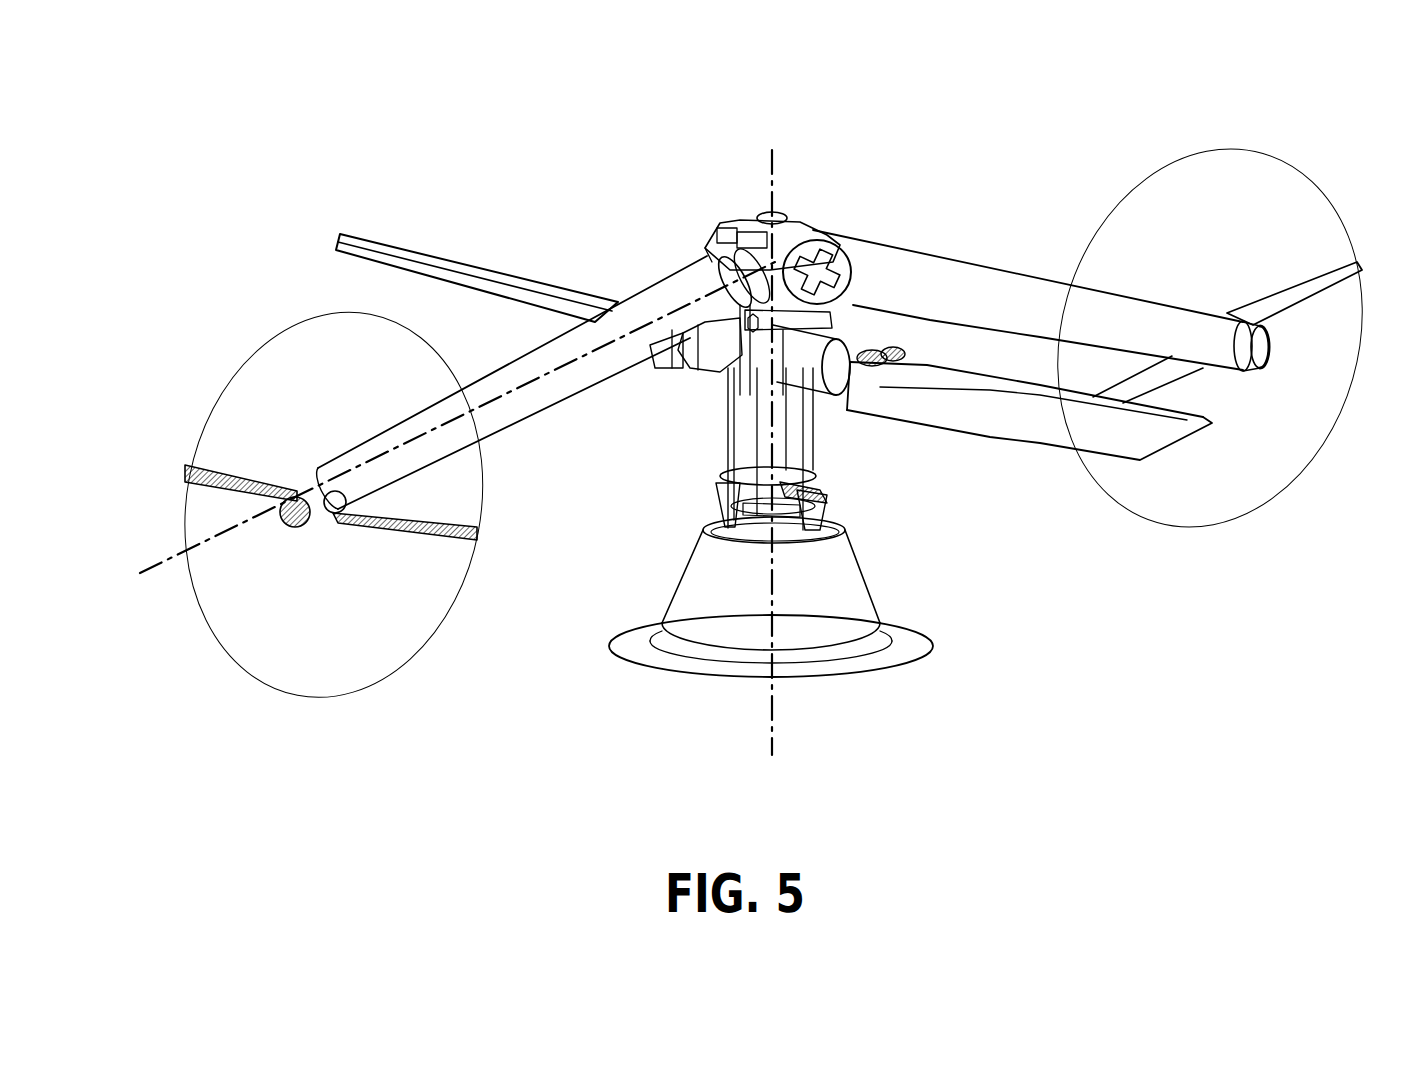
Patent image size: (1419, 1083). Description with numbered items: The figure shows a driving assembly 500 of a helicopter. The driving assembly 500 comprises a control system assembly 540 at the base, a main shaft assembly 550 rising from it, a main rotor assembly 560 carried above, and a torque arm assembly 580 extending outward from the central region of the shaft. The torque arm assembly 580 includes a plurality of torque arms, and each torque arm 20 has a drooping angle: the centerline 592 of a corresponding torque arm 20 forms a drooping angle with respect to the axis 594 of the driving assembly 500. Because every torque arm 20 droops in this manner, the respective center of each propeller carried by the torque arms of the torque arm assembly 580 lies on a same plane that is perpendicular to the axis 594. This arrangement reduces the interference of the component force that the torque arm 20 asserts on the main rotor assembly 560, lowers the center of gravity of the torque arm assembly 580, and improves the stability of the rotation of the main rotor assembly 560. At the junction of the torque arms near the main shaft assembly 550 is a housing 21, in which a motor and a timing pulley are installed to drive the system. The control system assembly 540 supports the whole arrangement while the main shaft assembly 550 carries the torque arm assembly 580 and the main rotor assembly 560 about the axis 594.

The driving assembly 500 is at (277, 83).
The torque arm 20 is at (660, 292).
The housing 21 is at (813, 230).
The control system assembly 540 is at (903, 572).
The main shaft assembly 550 is at (853, 472).
The main rotor assembly 560 is at (1170, 478).
The torque arm assembly 580 is at (1013, 248).
The centerline 592 is at (170, 590).
The axis 594 is at (797, 738).